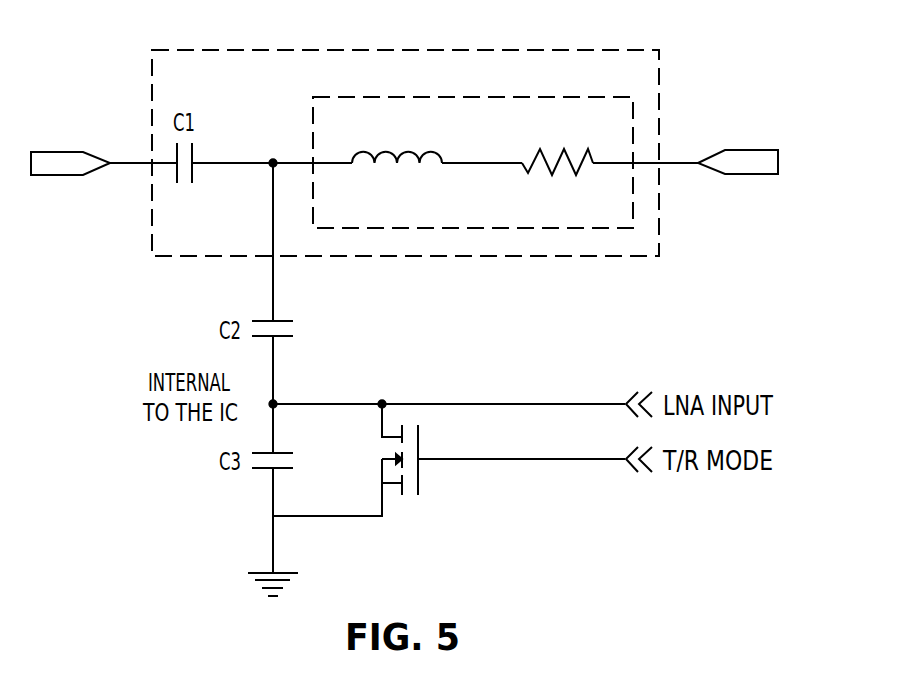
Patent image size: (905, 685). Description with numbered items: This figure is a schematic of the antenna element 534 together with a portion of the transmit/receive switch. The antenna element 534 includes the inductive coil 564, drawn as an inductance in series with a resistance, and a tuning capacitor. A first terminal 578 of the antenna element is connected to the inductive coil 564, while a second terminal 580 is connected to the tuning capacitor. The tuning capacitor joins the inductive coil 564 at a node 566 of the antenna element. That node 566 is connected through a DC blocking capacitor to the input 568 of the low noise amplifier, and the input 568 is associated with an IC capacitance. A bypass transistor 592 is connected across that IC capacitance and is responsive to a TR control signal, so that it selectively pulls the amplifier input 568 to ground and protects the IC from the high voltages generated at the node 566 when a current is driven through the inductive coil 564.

The antenna element 534 is at (537, 48).
The inductive coil 564 is at (567, 96).
The node 566 is at (270, 161).
The input of the low noise amplifier 568 is at (534, 402).
The first terminal 578 is at (752, 149).
The second terminal 580 is at (59, 151).
The bypass transistor 592 is at (392, 503).